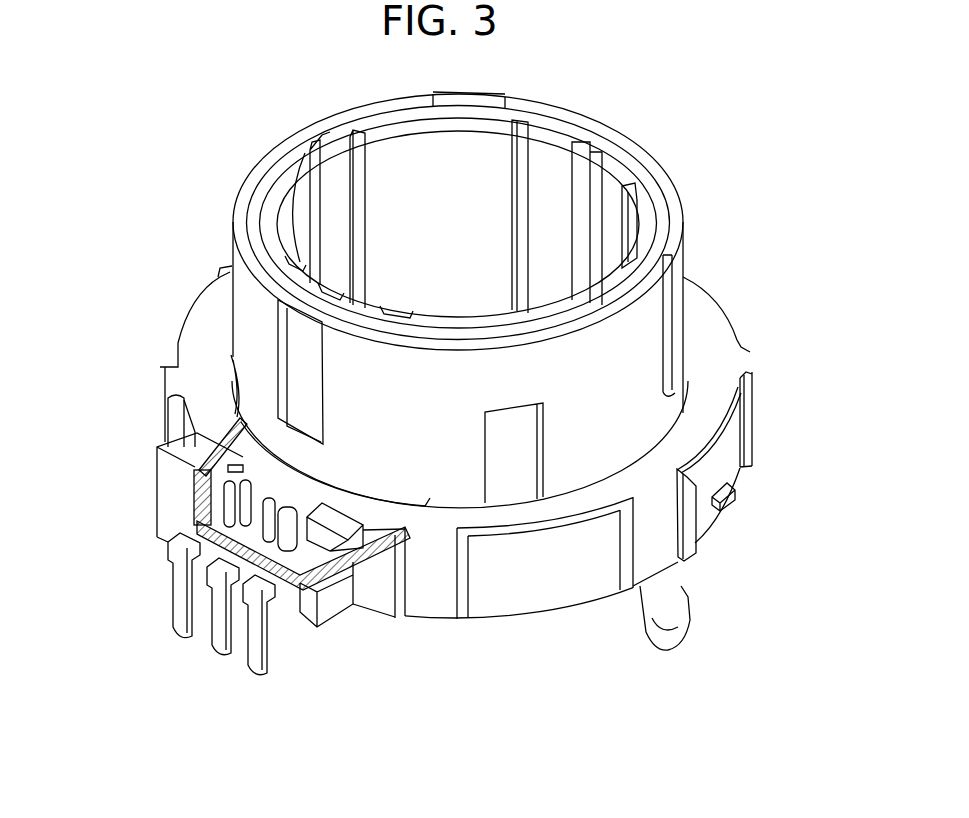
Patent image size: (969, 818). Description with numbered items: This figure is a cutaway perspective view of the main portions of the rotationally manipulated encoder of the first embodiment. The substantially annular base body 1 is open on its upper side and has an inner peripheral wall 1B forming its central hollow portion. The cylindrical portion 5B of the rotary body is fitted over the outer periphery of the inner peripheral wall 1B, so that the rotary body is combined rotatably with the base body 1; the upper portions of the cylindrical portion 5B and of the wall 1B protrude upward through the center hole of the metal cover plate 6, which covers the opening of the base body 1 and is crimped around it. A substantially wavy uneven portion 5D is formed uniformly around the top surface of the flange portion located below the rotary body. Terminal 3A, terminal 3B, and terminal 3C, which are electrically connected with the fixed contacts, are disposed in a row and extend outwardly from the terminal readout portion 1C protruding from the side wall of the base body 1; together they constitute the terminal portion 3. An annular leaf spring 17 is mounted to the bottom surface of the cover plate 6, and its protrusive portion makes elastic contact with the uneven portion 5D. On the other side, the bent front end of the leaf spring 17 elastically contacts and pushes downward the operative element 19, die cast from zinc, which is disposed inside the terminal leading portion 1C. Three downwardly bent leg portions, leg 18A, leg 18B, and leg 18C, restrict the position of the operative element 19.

The base body 1 is at (580, 579).
The inner peripheral wall 1B is at (645, 225).
The terminal readout portion 1C is at (328, 598).
The terminal portion 3 is at (102, 673).
The terminal 3A is at (175, 627).
The terminal 3B is at (213, 653).
The terminal 3C is at (247, 670).
The cylindrical portion 5B is at (628, 347).
The uneven portion 5D is at (340, 548).
The cover plate 6 is at (684, 444).
The annular leaf spring 17 is at (245, 450).
The leg 18A is at (193, 476).
The leg 18B is at (240, 510).
The leg 18C is at (265, 530).
The operative element 19 is at (293, 560).